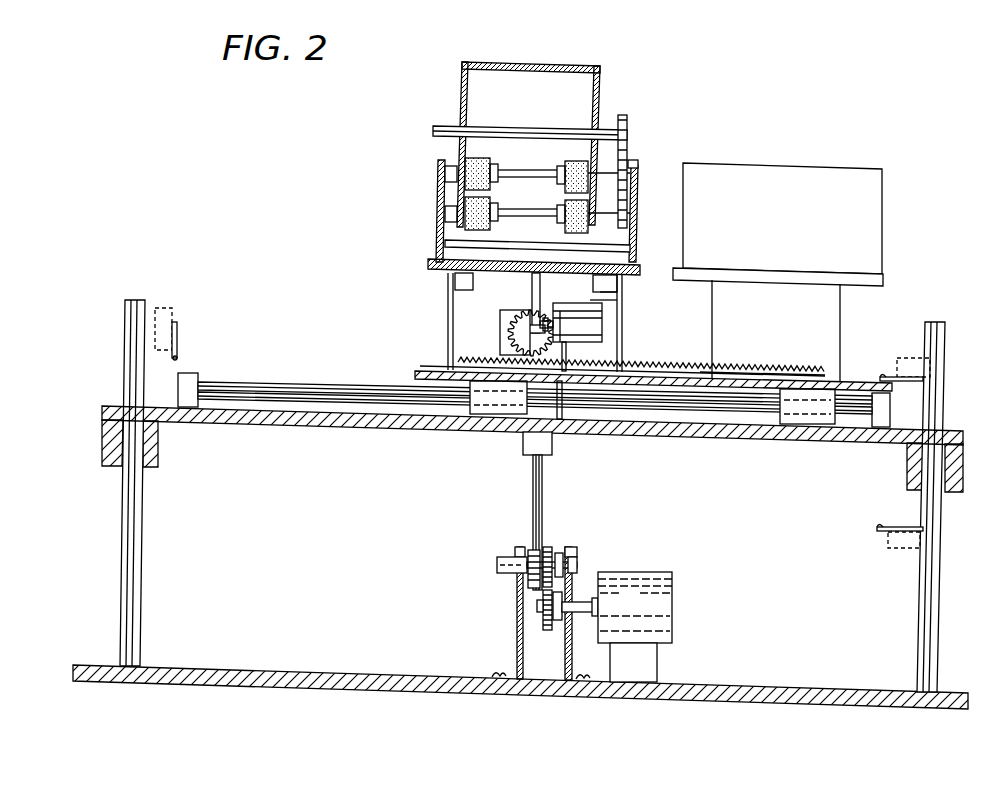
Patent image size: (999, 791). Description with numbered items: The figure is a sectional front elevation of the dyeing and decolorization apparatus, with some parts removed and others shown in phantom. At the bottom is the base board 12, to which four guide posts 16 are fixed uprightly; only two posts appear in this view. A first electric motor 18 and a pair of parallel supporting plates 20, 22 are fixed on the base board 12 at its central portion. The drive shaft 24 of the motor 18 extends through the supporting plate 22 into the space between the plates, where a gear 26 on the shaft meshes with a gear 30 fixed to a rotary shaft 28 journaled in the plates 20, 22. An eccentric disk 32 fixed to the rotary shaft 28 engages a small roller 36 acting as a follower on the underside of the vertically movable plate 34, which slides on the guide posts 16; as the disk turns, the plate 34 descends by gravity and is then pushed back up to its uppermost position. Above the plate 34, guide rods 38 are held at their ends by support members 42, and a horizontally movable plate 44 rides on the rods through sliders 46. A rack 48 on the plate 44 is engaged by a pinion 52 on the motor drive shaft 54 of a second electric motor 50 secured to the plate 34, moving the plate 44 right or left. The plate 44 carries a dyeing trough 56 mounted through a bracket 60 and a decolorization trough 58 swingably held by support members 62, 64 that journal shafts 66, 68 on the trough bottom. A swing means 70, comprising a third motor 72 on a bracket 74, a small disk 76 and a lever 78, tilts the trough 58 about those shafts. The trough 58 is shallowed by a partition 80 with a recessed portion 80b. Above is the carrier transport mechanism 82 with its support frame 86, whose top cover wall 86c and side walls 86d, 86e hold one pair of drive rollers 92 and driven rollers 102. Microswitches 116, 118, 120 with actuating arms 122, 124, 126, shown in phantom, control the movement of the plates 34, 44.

The base board 12 is at (777, 690).
The guide posts 16 is at (140, 560).
The first electric motor 18 is at (672, 586).
The supporting plate 20 is at (517, 630).
The supporting plate 22 is at (574, 625).
The drive shaft 24 is at (588, 600).
The gear 26 is at (548, 630).
The rotary shaft 28 is at (503, 557).
The gear 30 is at (548, 549).
The eccentric disk 32 is at (542, 500).
The vertically movable plate 34 is at (708, 433).
The small roller 36 is at (554, 451).
The guide rod 38 is at (275, 384).
The support members 42 is at (190, 373).
The horizontally movable plate 44 is at (763, 383).
The sliders 46 is at (493, 415).
The rack 48 is at (705, 368).
The second electric motor 50 is at (500, 319).
The pinion 52 is at (455, 357).
The motor drive shaft 54 is at (448, 332).
The dyeing trough 56 is at (795, 164).
The decolorization trough 58 is at (640, 175).
The bracket 60 is at (838, 301).
The support member 62 is at (448, 318).
The support member 64 is at (623, 328).
The shaft 66 is at (448, 284).
The shaft 68 is at (622, 289).
The swing means 70 is at (622, 311).
The third motor 72 is at (592, 335).
The bracket 74 is at (583, 352).
The small disk 76 is at (575, 307).
The lever 78 is at (532, 298).
The partition 80 is at (525, 185).
The recessed portion 80b is at (455, 244).
The carrier transport mechanism 82 is at (540, 125).
The support frame 86 is at (540, 125).
The top cover wall 86c is at (500, 63).
The side wall 86d is at (462, 95).
The side wall 86e is at (600, 95).
The drive rollers 92 is at (460, 232).
The driven rollers 102 is at (478, 160).
The microswitch 116 is at (890, 542).
The microswitch 118 is at (906, 358).
The microswitch 120 is at (165, 307).
The actuating arm 122 is at (886, 526).
The actuating arm 124 is at (880, 378).
The actuating arm 126 is at (178, 328).